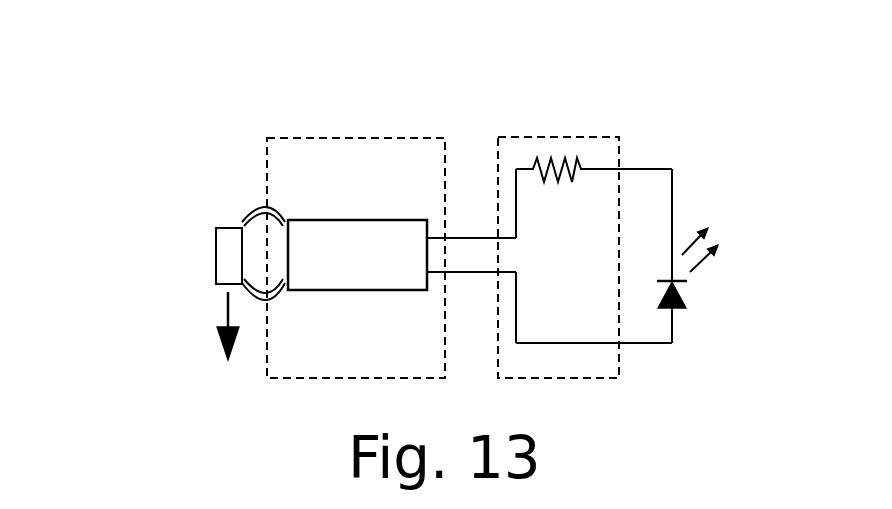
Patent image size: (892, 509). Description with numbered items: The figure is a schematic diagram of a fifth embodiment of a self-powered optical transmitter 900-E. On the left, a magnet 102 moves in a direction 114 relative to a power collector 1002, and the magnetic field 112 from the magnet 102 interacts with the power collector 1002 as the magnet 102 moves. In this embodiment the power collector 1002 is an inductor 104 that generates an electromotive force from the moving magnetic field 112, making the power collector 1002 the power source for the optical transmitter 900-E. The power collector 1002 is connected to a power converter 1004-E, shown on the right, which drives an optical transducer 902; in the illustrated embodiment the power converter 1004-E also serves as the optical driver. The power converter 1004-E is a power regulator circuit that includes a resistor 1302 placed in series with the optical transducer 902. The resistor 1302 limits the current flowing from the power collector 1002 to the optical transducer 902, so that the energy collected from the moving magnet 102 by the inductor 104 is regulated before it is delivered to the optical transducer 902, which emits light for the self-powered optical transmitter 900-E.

The self-powered optical transmitter 900-E is at (212, 70).
The magnet 102 is at (216, 258).
The magnetic field 112 is at (258, 210).
The direction 114 is at (225, 320).
The inductor 104 is at (340, 220).
The power collector 1002 is at (423, 172).
The power converter 1004-E is at (592, 133).
The resistor 1302 is at (558, 180).
The optical transducer 902 is at (680, 297).